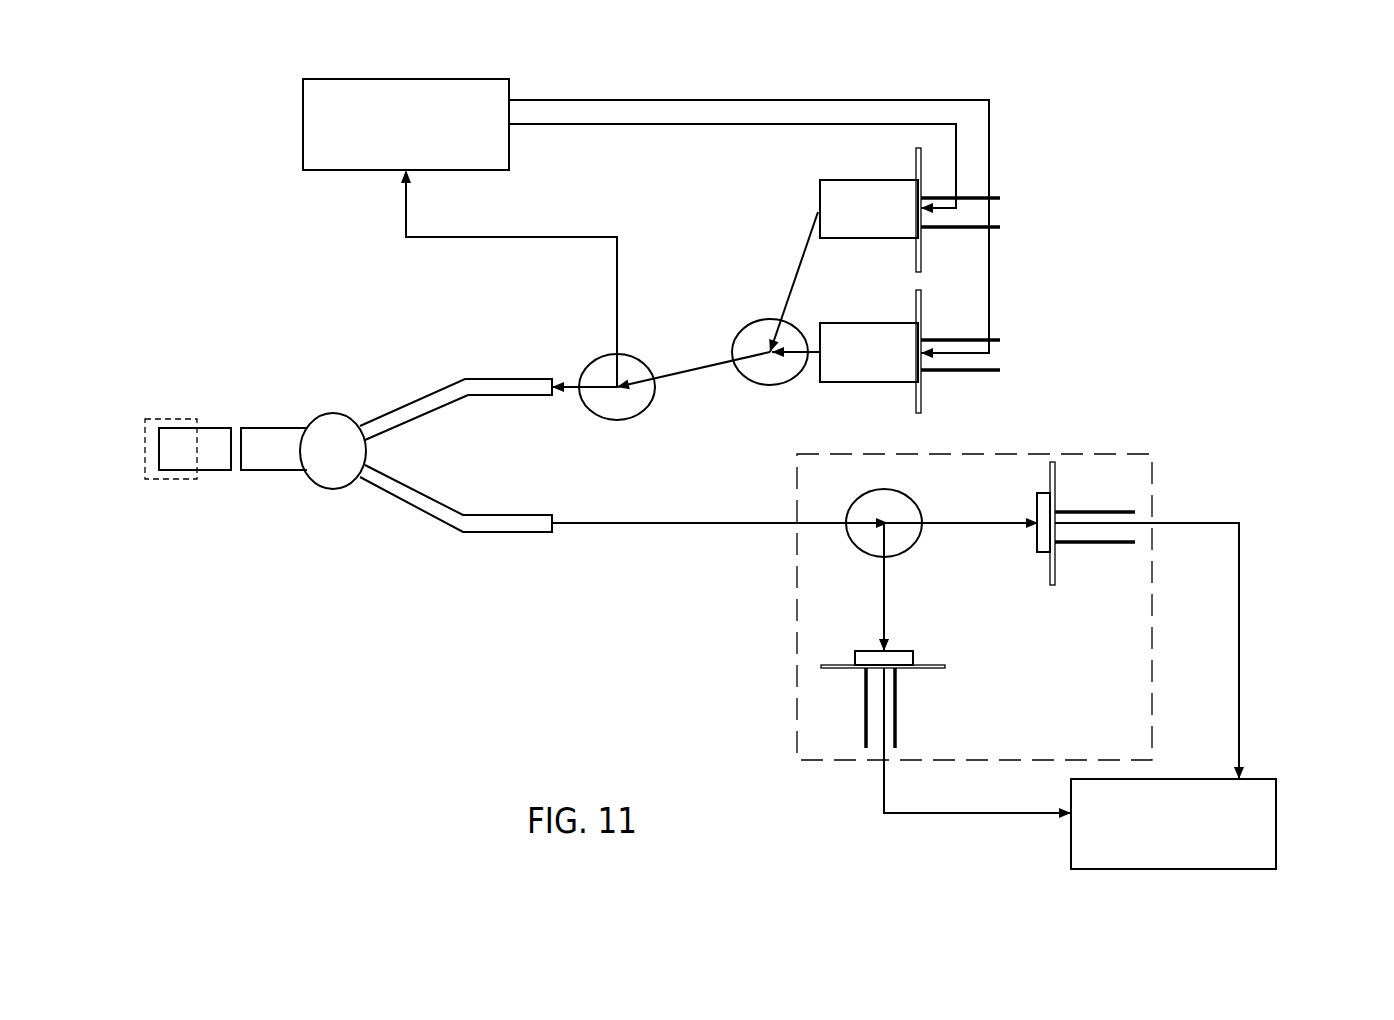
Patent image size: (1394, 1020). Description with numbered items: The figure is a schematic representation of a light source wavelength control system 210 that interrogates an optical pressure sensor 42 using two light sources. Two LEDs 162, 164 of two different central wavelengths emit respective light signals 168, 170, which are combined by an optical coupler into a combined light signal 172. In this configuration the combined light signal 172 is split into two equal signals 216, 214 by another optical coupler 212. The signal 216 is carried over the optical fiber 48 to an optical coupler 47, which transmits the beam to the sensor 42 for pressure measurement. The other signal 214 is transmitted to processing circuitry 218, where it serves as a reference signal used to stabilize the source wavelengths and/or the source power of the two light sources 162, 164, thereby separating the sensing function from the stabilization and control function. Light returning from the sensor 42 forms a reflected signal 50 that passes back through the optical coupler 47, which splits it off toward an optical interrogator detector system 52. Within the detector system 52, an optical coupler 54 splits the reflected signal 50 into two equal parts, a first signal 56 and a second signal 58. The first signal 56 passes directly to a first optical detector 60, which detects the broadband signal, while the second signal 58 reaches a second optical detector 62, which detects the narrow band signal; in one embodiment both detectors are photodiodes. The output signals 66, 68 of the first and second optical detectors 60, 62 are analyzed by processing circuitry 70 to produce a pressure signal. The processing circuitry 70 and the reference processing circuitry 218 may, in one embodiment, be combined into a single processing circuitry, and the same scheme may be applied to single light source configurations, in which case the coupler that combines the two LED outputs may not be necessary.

The light source wavelength control system 210 is at (1270, 118).
The processing circuitry 218 is at (303, 125).
The signal 214 is at (572, 237).
The pressure sensor 42 is at (168, 419).
The optical coupler 47 is at (328, 420).
The optical fiber 48 is at (405, 400).
The signal 216 is at (557, 396).
The optical coupler 212 is at (648, 410).
The combined light signal 172 is at (684, 366).
The light signal 170 is at (804, 362).
The light signal 168 is at (795, 270).
The LED 162 is at (862, 180).
The LED 164 is at (870, 323).
The reflected signal 50 is at (662, 520).
The optical interrogator detector system 52 is at (1005, 454).
The optical coupler 54 is at (859, 504).
The first signal 56 is at (981, 520).
The second signal 58 is at (890, 584).
The first optical detector 60 is at (1108, 511).
The second optical detector 62 is at (898, 724).
The output signal 66 is at (1212, 522).
The output signal 68 is at (887, 800).
The processing circuitry 70 is at (1194, 779).